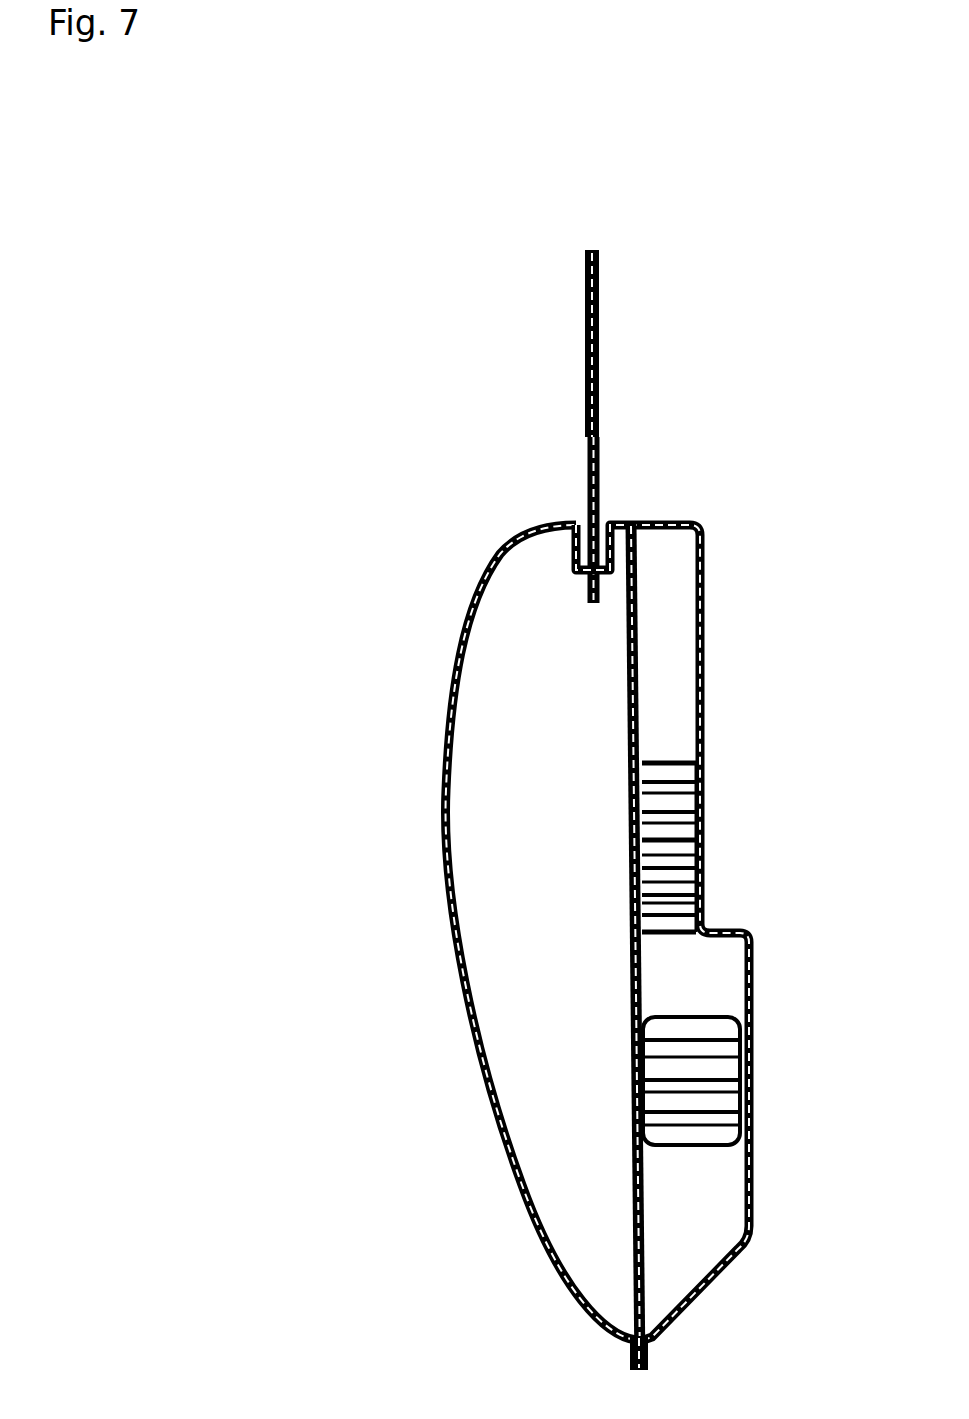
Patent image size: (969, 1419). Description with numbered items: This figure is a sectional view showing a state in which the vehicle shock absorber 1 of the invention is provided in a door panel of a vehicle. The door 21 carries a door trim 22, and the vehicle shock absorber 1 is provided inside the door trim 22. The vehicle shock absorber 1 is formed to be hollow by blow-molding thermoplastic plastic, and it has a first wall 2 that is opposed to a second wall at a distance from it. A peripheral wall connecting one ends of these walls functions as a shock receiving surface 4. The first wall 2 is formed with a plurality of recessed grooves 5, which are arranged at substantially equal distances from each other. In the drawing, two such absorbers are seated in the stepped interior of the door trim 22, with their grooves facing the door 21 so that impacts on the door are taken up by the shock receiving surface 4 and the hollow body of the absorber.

The door 21 is at (482, 516).
The door trim 22 is at (705, 553).
The vehicle shock absorber 1 is at (775, 949).
The first wall 2 is at (682, 893).
The shock receiving surface 4 is at (706, 800).
The recessed grooves 5 is at (682, 845).